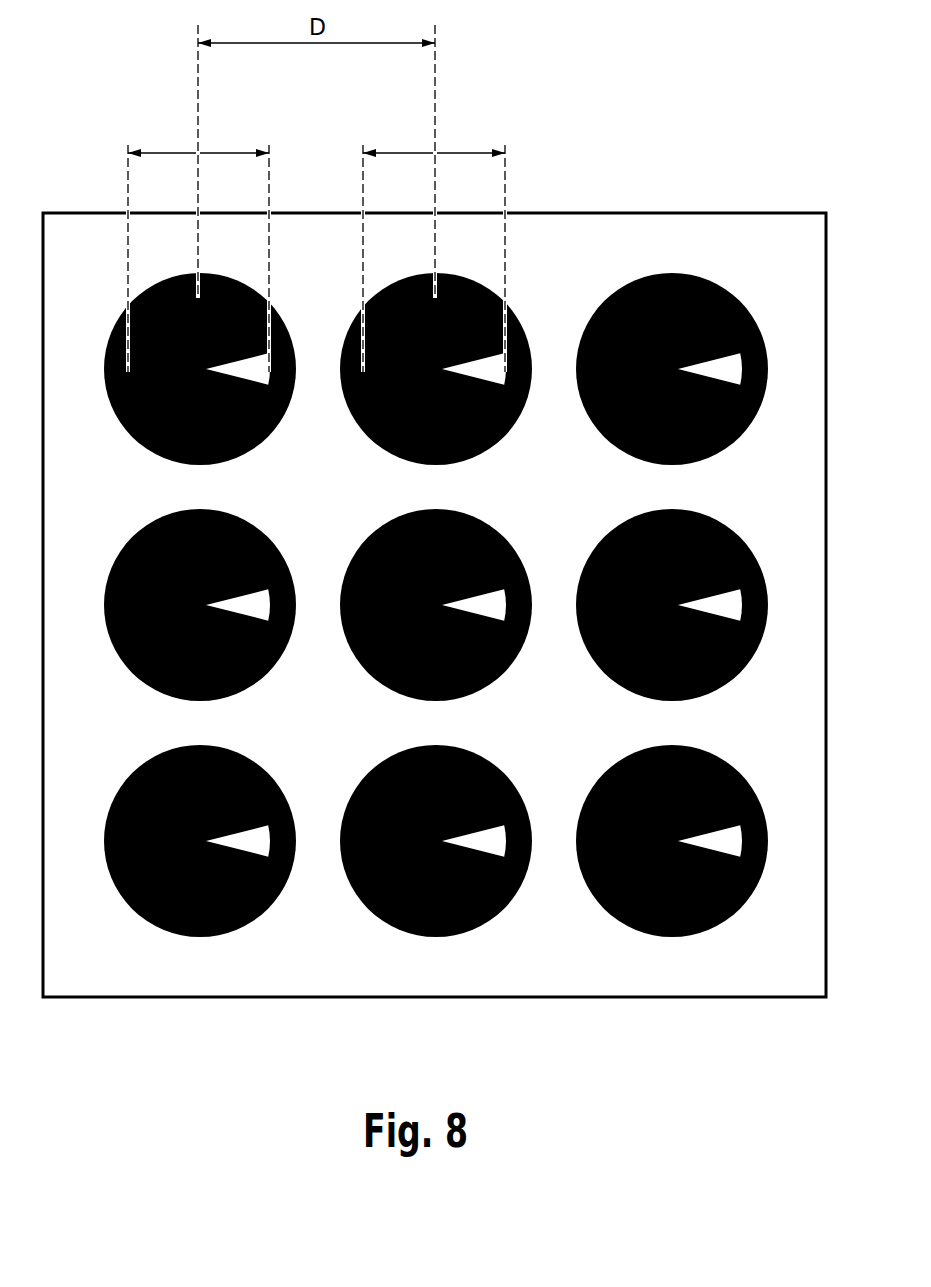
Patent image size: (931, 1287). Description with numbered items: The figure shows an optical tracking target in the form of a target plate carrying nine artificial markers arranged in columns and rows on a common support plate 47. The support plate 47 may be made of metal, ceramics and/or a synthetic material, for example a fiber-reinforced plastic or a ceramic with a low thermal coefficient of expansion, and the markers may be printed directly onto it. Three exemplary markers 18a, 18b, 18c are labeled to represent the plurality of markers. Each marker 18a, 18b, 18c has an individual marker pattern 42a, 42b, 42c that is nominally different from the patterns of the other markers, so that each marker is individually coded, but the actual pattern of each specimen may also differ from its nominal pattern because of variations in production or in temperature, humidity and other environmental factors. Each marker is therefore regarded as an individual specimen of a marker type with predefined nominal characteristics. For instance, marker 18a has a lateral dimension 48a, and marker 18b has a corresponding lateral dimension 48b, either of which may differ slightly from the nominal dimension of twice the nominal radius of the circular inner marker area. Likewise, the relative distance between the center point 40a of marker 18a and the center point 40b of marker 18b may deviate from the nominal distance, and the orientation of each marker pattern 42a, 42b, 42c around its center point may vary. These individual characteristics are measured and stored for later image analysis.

The marker 18a is at (120, 341).
The marker 18b is at (513, 341).
The marker 18c is at (118, 628).
The center point 40a is at (200, 370).
The center point 40b is at (436, 370).
The marker pattern 42a is at (175, 318).
The marker pattern 42b is at (458, 318).
The marker pattern 42c is at (175, 652).
The common support plate 47 is at (158, 997).
The lateral dimension 48a is at (168, 150).
The lateral dimension 48b is at (465, 150).